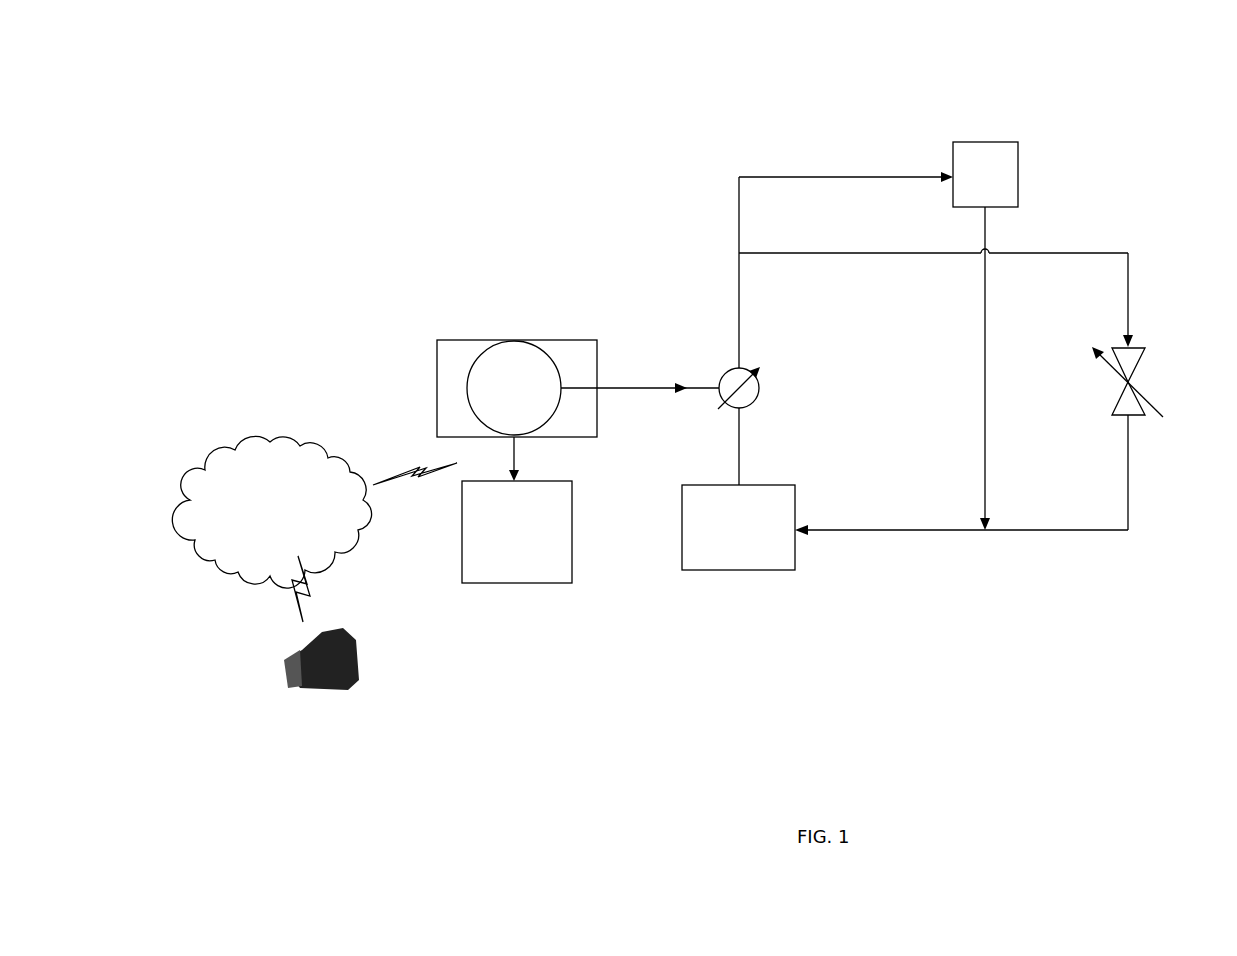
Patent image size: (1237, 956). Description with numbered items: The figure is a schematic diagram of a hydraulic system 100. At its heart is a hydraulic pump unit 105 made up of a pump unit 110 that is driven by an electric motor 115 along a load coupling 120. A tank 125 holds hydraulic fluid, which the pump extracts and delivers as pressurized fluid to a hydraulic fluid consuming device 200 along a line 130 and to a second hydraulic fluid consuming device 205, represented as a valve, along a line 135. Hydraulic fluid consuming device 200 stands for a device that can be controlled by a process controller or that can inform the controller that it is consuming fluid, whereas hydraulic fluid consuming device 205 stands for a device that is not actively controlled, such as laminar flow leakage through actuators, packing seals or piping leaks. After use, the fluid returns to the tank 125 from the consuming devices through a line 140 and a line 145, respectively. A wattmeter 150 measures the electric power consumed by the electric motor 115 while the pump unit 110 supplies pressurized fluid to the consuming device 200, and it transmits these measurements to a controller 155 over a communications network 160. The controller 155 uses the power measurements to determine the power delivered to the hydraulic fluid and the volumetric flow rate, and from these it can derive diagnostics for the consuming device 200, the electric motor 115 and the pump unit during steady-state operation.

The hydraulic system 100 is at (273, 129).
The hydraulic pump unit 105 is at (651, 272).
The pump unit 110 is at (755, 404).
The electric motor 115 is at (437, 387).
The load coupling 120 is at (625, 388).
The tank 125 is at (718, 533).
The line 130 is at (843, 176).
The line 135 is at (853, 253).
The line 140 is at (985, 367).
The line 145 is at (1128, 492).
The wattmeter 150 is at (572, 530).
The controller 155 is at (273, 657).
The communications network 160 is at (303, 441).
The hydraulic fluid consuming device 200 is at (970, 188).
The hydraulic fluid consuming device 205 is at (1133, 417).